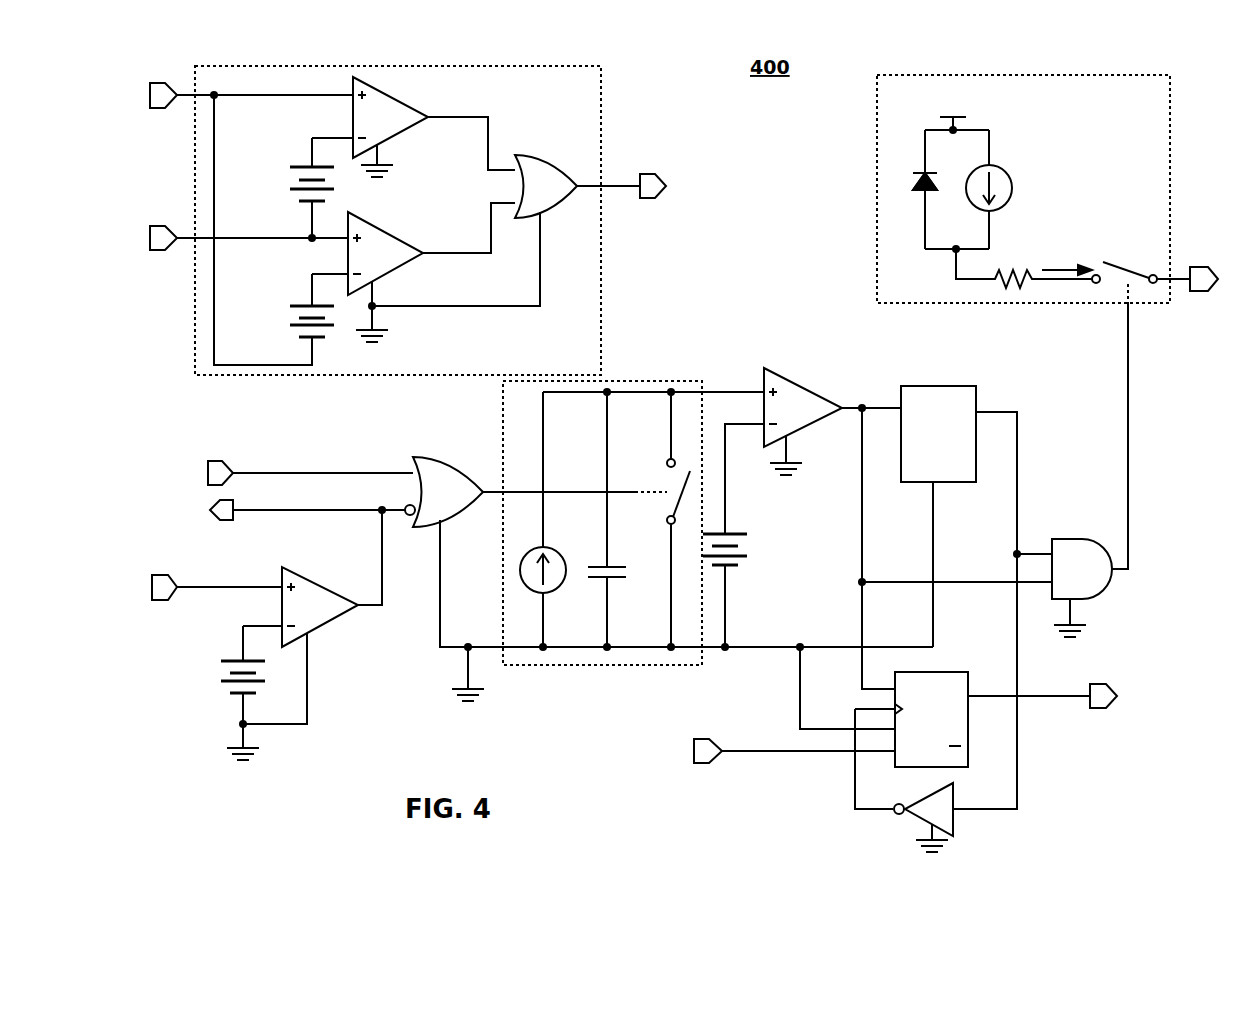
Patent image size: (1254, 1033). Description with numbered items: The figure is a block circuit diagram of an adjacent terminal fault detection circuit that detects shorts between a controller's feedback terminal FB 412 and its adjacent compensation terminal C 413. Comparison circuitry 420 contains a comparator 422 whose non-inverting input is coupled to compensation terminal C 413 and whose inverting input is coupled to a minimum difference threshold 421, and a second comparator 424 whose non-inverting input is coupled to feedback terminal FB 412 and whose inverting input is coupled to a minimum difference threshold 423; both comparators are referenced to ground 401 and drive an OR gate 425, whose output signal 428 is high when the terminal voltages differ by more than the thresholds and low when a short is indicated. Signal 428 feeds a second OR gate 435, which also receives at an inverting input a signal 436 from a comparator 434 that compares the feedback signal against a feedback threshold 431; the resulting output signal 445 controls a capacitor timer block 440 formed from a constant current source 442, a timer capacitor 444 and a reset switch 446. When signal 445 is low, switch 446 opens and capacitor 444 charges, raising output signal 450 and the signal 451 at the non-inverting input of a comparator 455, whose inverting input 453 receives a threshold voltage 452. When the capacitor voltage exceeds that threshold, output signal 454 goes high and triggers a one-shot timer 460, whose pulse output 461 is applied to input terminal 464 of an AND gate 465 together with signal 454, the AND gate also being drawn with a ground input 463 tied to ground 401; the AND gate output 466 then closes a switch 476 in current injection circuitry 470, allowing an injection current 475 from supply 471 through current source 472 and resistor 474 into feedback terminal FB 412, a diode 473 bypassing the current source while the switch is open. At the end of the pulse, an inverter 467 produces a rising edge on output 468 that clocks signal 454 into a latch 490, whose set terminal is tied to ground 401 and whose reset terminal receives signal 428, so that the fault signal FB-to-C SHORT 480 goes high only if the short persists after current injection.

The ground 401 is at (395, 172).
The feedback terminal FB 412 is at (162, 258).
The compensation terminal C 413 is at (165, 115).
The comparison circuitry 420 is at (575, 66).
The minimum difference threshold 421 is at (290, 192).
The comparator 422 is at (388, 98).
The minimum difference threshold 423 is at (290, 318).
The second comparator 424 is at (385, 228).
The OR gate 425 is at (542, 157).
The signal VFB≠VC 428 is at (680, 180).
The feedback threshold VFB_Th 431 is at (225, 690).
The comparator 434 is at (314, 577).
The second OR gate 435 is at (440, 458).
The signal 436 is at (355, 515).
The capacitor timer block 440 is at (625, 381).
The constant current source 442 is at (530, 548).
The timer capacitor Ctimer 444 is at (628, 582).
The output signal 445 is at (560, 488).
The reset switch 446 is at (666, 478).
The output signal 450 is at (703, 392).
The non-inverting input signal 451 is at (753, 388).
The threshold voltage Vtime_Th 452 is at (775, 538).
The inverting input 453 is at (758, 430).
The output signal 454 is at (862, 400).
The comparator 455 is at (803, 378).
The one-shot timer 460 is at (970, 382).
The output signal 461 is at (980, 408).
The AND gate ground input 463 is at (1046, 590).
The input terminal 464 is at (1045, 550).
The AND gate 465 is at (1068, 540).
The output signal 466 is at (1122, 315).
The inverter 467 is at (958, 798).
The inverter output 468 is at (885, 812).
The current injection circuitry 470 is at (1078, 75).
The supply VCC 471 is at (968, 118).
The current source 472 is at (1014, 195).
The diode 473 is at (915, 178).
The resistor 474 is at (1020, 272).
The injection current IFB 475 is at (1082, 262).
The switch 476 is at (1125, 266).
The fault signal FB-to-C SHORT 480 is at (1105, 710).
The latch 490 is at (950, 668).